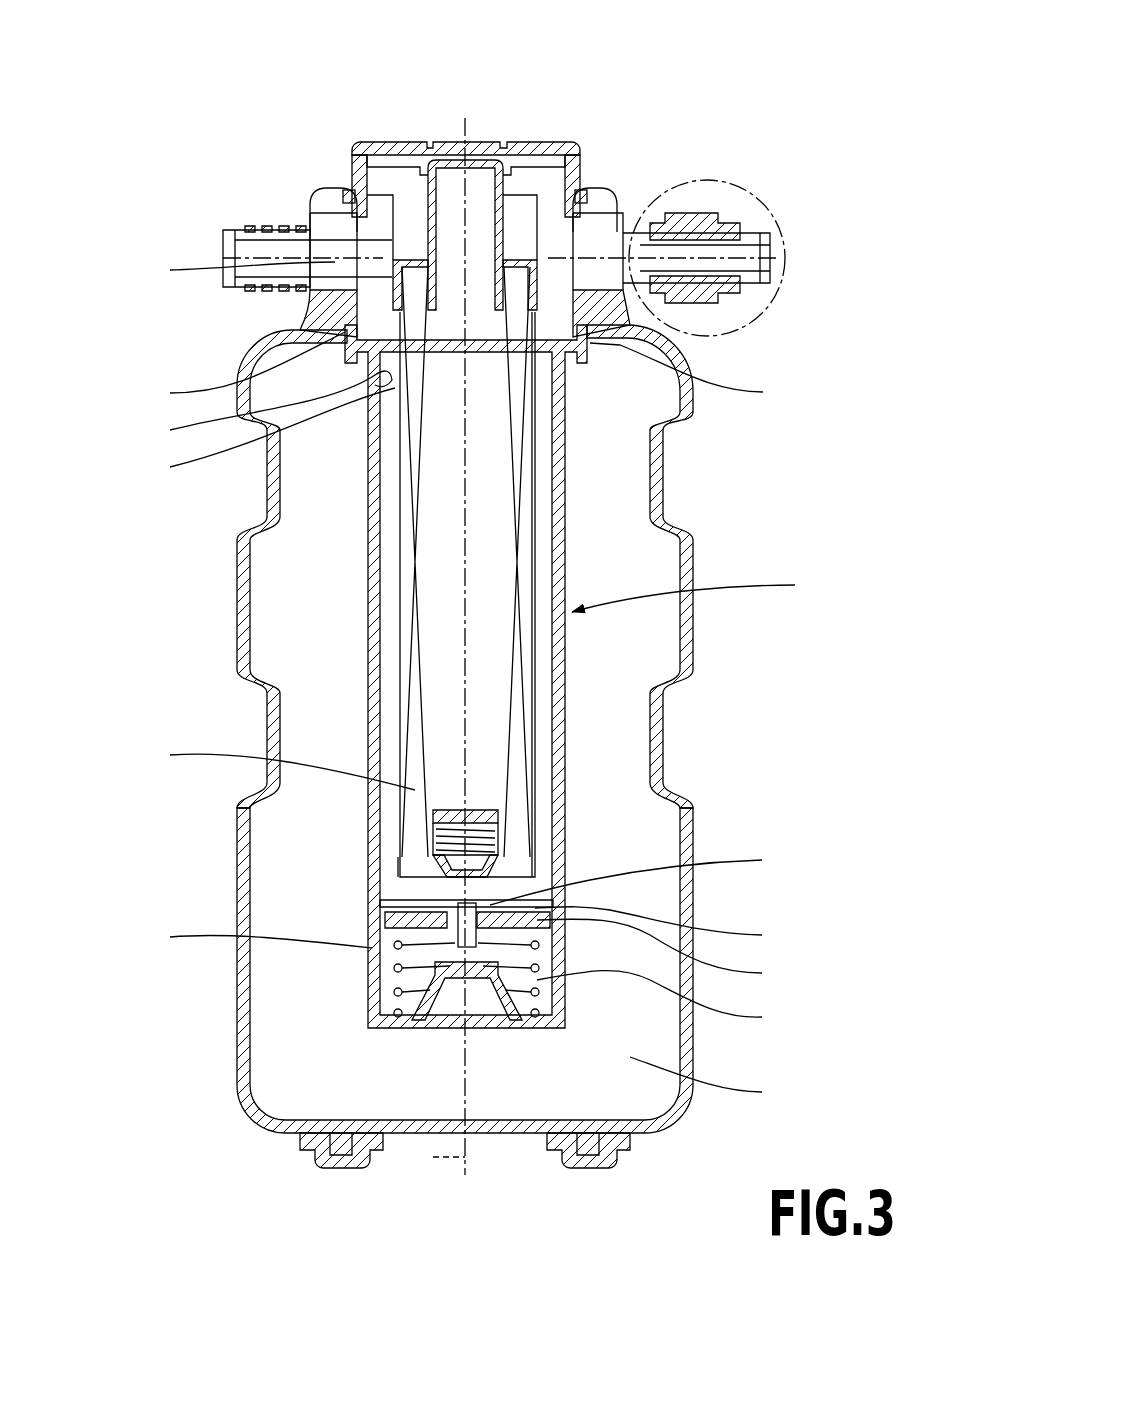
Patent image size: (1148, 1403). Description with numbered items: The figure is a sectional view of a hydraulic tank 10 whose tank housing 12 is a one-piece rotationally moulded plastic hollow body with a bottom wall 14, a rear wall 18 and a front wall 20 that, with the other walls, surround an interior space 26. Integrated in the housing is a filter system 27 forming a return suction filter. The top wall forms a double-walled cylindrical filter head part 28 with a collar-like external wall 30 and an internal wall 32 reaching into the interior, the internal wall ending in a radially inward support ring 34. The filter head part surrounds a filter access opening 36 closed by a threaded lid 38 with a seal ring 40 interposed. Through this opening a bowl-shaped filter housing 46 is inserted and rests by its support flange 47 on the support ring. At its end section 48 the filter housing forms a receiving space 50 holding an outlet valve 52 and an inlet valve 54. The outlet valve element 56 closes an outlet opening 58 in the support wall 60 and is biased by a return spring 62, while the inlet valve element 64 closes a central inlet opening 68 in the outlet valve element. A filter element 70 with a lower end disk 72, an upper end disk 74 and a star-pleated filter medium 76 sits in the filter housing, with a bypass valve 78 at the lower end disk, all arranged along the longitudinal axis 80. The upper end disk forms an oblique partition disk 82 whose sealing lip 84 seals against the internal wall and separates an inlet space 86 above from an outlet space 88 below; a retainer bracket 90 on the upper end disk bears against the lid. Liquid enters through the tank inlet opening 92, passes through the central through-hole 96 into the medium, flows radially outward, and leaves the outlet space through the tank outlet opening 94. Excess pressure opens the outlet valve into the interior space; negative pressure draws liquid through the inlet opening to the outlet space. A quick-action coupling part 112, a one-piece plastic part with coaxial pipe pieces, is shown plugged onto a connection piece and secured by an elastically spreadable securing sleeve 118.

The hydraulic tank 10 is at (568, 108).
The tank housing 12 is at (466, 777).
The bottom wall 14 is at (505, 1135).
The rear wall 18 is at (237, 598).
The front wall 20 is at (695, 628).
The interior space 26 is at (713, 1083).
The filter system 27 is at (700, 589).
The filter head part 28 is at (322, 180).
The external wall 30 is at (325, 300).
The internal wall 32 is at (239, 369).
The support ring 34 is at (263, 408).
The filter access opening 36 is at (264, 436).
The lid 38 is at (395, 155).
The seal ring 40 is at (349, 188).
The filter housing 46 is at (365, 667).
The support flange 47 is at (693, 375).
The end section 48 is at (253, 936).
The receiving space 50 is at (392, 950).
The outlet valve 52 is at (377, 922).
The inlet valve 54 is at (442, 890).
The outlet valve element 56 is at (666, 954).
The outlet opening 58 is at (412, 972).
The support wall 60 is at (665, 928).
The return spring 62 is at (666, 1001).
The inlet valve element 64 is at (520, 912).
The inlet opening 68 is at (643, 872).
The filter element 70 is at (398, 720).
The lower end disk 72 is at (495, 893).
The upper end disk 74 is at (565, 240).
The filter medium 76 is at (274, 763).
The bypass valve 78 is at (432, 833).
The longitudinal axis 80 is at (433, 1157).
The partition disk 82 is at (315, 232).
The sealing lip 84 is at (317, 197).
The inlet space 86 is at (610, 212).
The outlet space 88 is at (396, 258).
The retainer bracket 90 is at (480, 150).
The tank inlet opening 92 is at (630, 232).
The tank outlet opening 94 is at (234, 269).
The central through-hole 96 is at (543, 150).
The quick-action coupling part 112 is at (753, 227).
The securing sleeve 118 is at (700, 310).